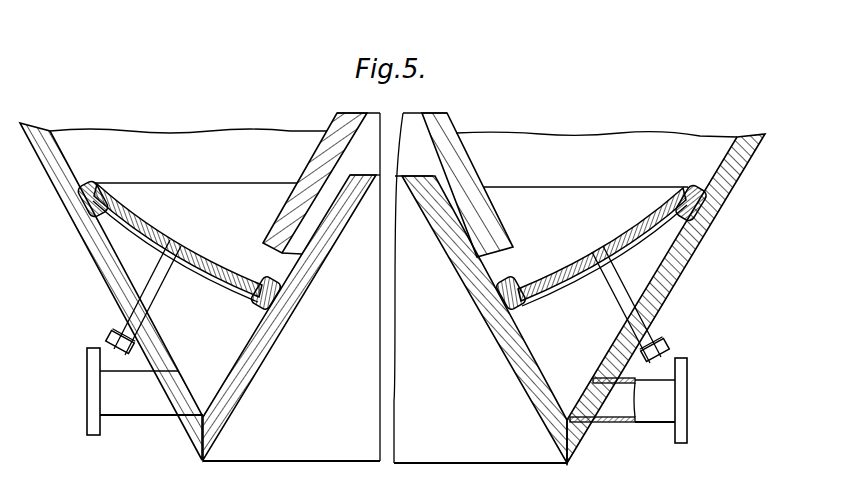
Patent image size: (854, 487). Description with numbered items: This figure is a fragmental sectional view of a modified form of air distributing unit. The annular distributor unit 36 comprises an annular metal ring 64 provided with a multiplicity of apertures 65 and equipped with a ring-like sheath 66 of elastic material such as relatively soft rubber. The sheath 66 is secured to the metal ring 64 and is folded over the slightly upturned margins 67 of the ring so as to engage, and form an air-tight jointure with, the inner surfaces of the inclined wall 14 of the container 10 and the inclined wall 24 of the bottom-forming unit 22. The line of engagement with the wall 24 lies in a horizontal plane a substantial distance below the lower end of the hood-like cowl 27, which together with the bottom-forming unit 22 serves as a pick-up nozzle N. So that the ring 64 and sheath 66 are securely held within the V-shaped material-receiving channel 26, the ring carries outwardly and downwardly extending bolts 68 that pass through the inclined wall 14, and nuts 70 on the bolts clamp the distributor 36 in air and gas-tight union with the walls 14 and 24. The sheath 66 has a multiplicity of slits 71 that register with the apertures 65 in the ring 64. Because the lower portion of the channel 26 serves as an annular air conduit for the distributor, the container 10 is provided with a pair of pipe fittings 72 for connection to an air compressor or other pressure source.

The container 10 is at (573, 132).
The inclined wall 14 is at (86, 238).
The bottom-forming unit 22 is at (484, 319).
The inclined wall 24 is at (265, 360).
The V-shaped material-receiving channel 26 is at (488, 288).
The hood-like cowl 27 is at (457, 128).
The annular distributor unit 36 is at (584, 203).
The annular metal ring 64 is at (220, 286).
The apertures 65 is at (111, 220).
The ring-like sheath 66 is at (176, 190).
The upturned margins 67 is at (97, 183).
The bolts 68 is at (152, 293).
The nuts 70 is at (108, 342).
The slits 71 is at (122, 218).
The pipe fittings 72 is at (149, 414).
The pick-up nozzle N is at (313, 155).